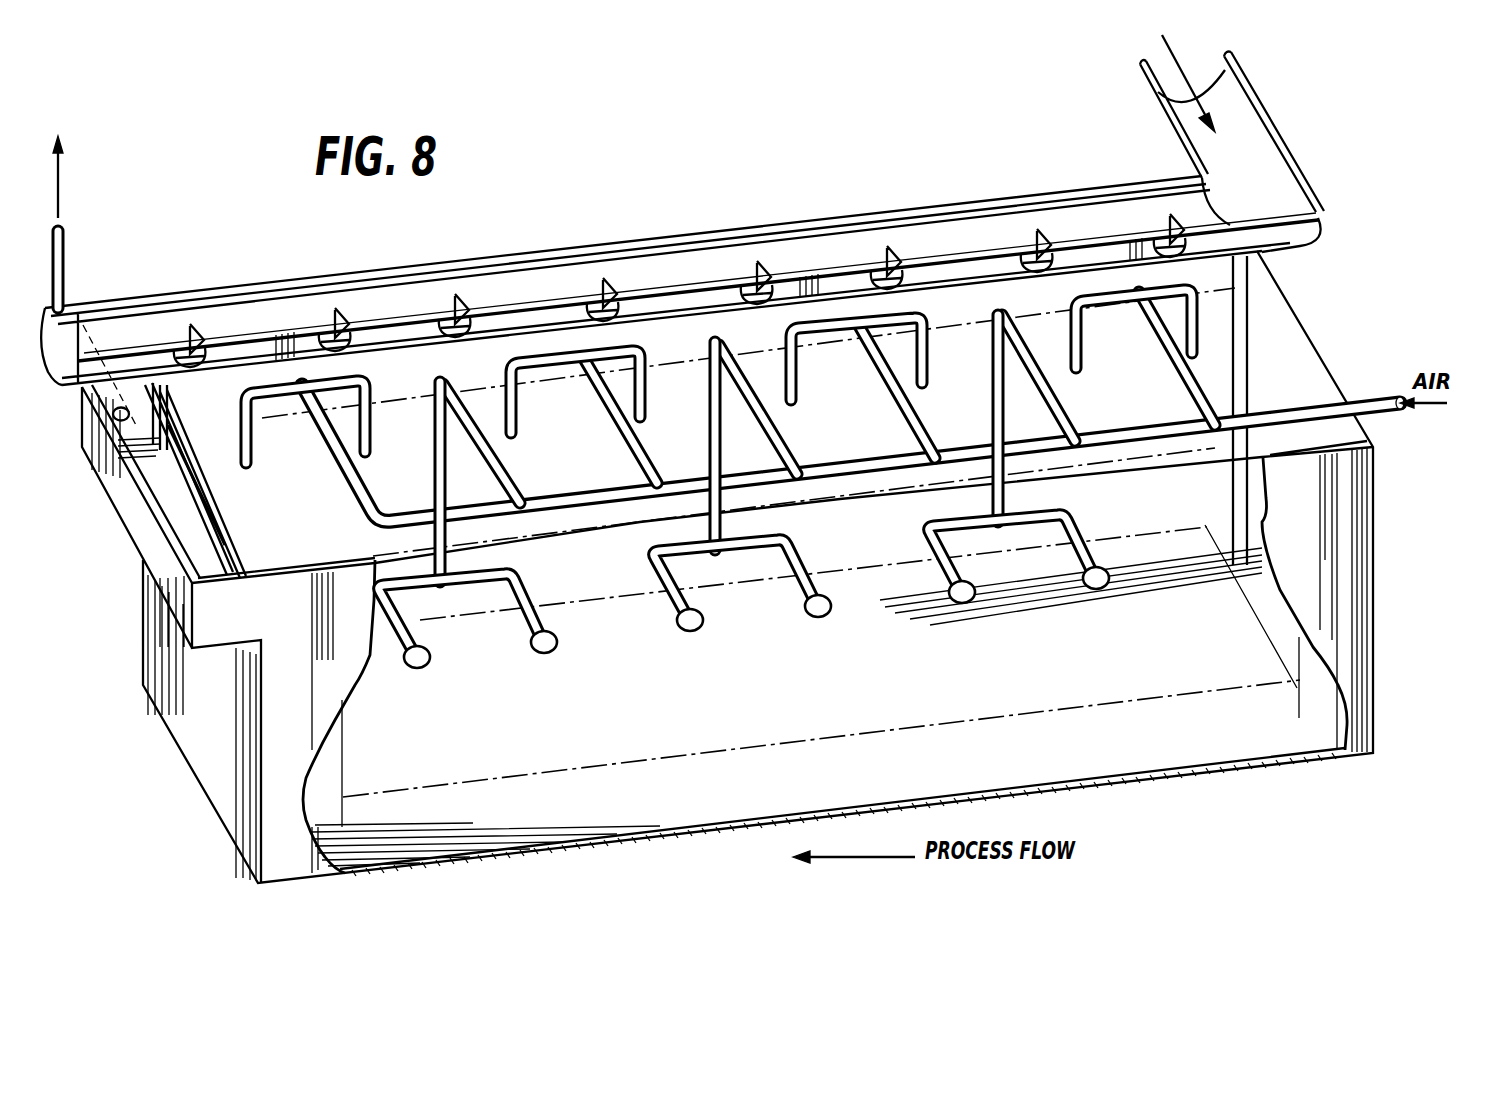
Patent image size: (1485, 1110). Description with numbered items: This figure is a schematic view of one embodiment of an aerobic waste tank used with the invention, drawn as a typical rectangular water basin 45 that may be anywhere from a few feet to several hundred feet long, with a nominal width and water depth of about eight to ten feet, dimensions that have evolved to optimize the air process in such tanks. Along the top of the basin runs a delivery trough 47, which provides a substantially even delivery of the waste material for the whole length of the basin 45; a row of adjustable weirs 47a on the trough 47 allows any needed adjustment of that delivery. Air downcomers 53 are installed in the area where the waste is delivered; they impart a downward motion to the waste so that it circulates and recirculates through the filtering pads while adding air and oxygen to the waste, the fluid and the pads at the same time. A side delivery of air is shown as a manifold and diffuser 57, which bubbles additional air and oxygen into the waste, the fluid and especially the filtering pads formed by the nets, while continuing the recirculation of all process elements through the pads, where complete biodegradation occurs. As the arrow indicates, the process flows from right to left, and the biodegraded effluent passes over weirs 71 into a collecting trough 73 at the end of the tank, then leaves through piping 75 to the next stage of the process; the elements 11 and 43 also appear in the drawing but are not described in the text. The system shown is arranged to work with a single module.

The tank 11 is at (1097, 711).
The tank end wall 43 is at (1293, 700).
The rectangular water basin 45 is at (1370, 673).
The delivery trough 47 is at (1287, 98).
The adjustable weirs 47a is at (182, 352).
The air downcomers 53 is at (373, 428).
The manifold and diffuser 57 is at (521, 585).
The weirs 71 is at (173, 432).
The collecting trough 73 is at (137, 512).
The piping 75 is at (66, 250).